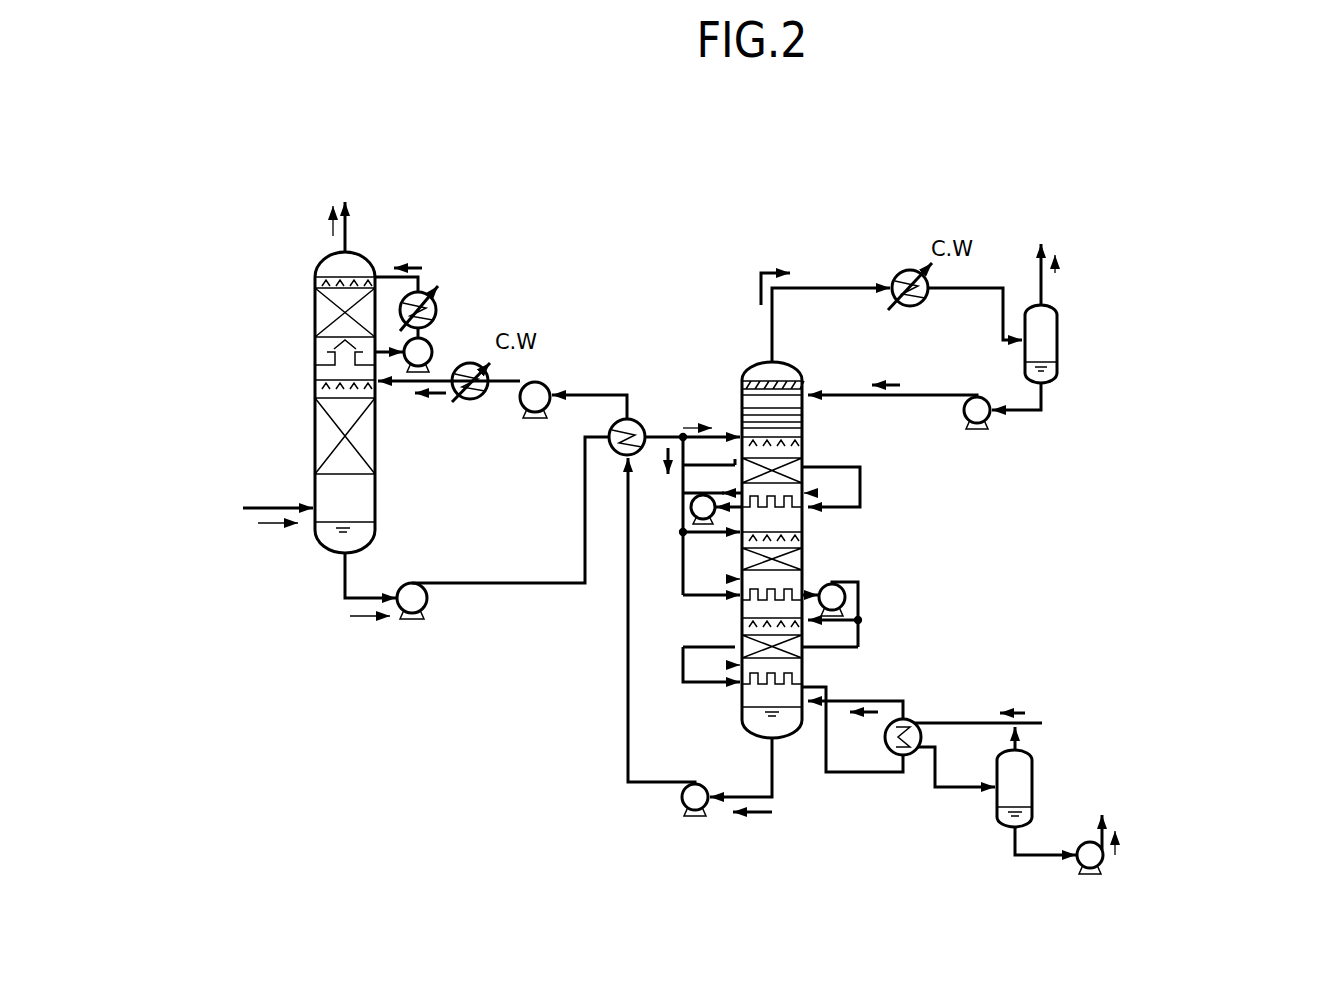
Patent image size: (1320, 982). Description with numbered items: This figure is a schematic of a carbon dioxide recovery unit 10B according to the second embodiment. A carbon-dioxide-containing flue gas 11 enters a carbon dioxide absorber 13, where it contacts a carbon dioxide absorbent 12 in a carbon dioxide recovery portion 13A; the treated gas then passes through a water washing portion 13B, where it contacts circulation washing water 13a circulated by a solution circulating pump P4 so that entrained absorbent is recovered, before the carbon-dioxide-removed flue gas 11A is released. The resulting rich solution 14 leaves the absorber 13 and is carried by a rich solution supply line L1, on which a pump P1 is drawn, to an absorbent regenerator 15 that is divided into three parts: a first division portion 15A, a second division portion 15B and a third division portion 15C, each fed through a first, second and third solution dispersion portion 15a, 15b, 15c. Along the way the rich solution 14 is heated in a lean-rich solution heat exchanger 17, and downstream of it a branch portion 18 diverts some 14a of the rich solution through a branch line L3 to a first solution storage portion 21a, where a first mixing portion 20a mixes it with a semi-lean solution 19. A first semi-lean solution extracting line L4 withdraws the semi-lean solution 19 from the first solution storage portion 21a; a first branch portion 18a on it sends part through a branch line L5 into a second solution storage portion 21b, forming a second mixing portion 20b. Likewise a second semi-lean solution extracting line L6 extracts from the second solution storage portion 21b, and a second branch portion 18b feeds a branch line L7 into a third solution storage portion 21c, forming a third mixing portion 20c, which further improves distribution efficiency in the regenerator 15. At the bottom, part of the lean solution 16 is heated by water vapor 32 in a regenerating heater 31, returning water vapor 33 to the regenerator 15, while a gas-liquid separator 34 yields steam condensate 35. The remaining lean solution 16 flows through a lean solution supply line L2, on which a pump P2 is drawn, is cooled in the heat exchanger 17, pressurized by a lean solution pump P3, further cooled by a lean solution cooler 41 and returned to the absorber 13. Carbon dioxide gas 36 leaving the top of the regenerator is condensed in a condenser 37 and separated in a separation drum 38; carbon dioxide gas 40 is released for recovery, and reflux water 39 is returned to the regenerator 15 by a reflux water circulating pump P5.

The CO2 recovery unit 10B is at (579, 184).
The CO2-containing flue gas 11 is at (266, 528).
The CO2-removed flue gas 11A is at (327, 221).
The CO2 absorbent 12 is at (420, 404).
The CO2 absorber 13 is at (316, 357).
The CO2 recovery portion 13A is at (318, 435).
The water washing portion 13B is at (318, 313).
The circulation washing water 13a is at (422, 268).
The rich solution 14 is at (366, 622).
The branched rich solution 14a is at (662, 462).
The absorbent regenerator 15 is at (778, 503).
The first division portion 15A is at (808, 455).
The second division portion 15B is at (806, 550).
The third division portion 15C is at (798, 652).
The first solution dispersion portion 15a is at (806, 428).
The second solution dispersion portion 15b is at (806, 533).
The third solution dispersion portion 15c is at (732, 646).
The lean solution 16 is at (765, 818).
The lean-rich solution heat exchanger 17 is at (616, 454).
The branch portion 18 is at (676, 432).
The first branch portion 18a is at (684, 545).
The second branch portion 18b is at (862, 621).
The semi-lean solution 19 is at (722, 490).
The first mixing portion 20a is at (860, 492).
The second mixing portion 20b is at (738, 581).
The third mixing portion 20c is at (740, 667).
The first solution storage portion 21a is at (812, 508).
The second solution storage portion 21b is at (745, 602).
The third solution storage portion 21c is at (745, 690).
The regenerating heater 31 is at (910, 720).
The water vapor 32 is at (1010, 711).
The water vapor 33 is at (864, 718).
The gas-liquid separator 34 is at (1035, 783).
The steam condensate 35 is at (1120, 855).
The CO2 gas 36 is at (765, 270).
The condenser 37 is at (905, 270).
The separation drum 38 is at (1050, 338).
The reflux water 39 is at (887, 378).
The CO2 gas 40 is at (1062, 273).
The lean solution cooler 41 is at (468, 409).
The pump P1 is at (420, 580).
The pump P2 is at (705, 786).
The lean solution pump P3 is at (543, 382).
The solution circulating pump P4 is at (436, 343).
The reflux water circulating pump P5 is at (983, 400).
The rich solution supply line L1 is at (516, 590).
The lean solution supply line L2 is at (625, 698).
The branch line L3 is at (688, 454).
The first semi-lean solution extracting line L4 is at (683, 514).
The branch line L5 is at (683, 570).
The second semi-lean solution extracting line L6 is at (861, 592).
The branch line L7 is at (862, 649).